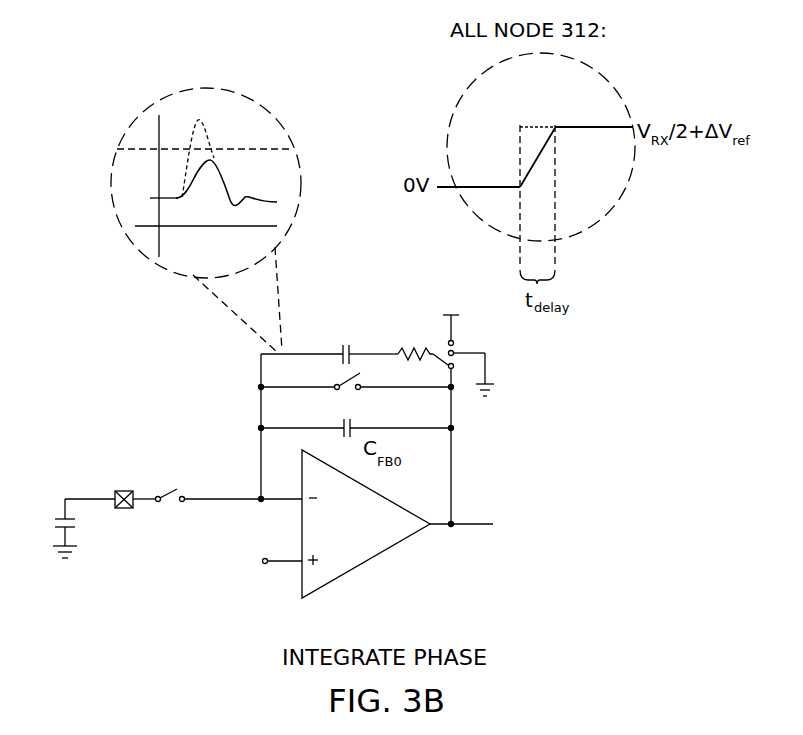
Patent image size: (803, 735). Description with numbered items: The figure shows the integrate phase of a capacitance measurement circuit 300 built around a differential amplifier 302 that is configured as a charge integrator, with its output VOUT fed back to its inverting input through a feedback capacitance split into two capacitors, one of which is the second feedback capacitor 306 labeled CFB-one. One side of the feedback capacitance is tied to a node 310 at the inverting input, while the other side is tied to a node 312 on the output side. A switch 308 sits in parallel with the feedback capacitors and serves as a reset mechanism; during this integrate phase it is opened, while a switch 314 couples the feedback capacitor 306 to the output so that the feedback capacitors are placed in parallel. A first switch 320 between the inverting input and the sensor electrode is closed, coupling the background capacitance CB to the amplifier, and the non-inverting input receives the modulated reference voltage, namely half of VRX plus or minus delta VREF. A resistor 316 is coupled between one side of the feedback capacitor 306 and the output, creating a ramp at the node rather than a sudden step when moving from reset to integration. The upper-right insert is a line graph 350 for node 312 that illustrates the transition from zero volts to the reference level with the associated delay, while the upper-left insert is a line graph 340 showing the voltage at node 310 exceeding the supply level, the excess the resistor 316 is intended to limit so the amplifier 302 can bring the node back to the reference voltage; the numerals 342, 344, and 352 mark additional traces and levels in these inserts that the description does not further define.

The capacitance measurement circuit 300 is at (143, 311).
The differential amplifier 302 is at (362, 563).
The second feedback capacitor 306 is at (327, 344).
The switch 308 is at (339, 377).
The node 310 is at (259, 347).
The node 312 is at (385, 340).
The switch 314 is at (437, 368).
The resistor 316 is at (408, 364).
The first switch 320 is at (175, 487).
The line graph 340 is at (217, 115).
The damped signal waveform 342 is at (196, 183).
The threshold level 344 is at (135, 148).
The line graph 350 is at (532, 125).
The settled voltage level 352 is at (585, 132).